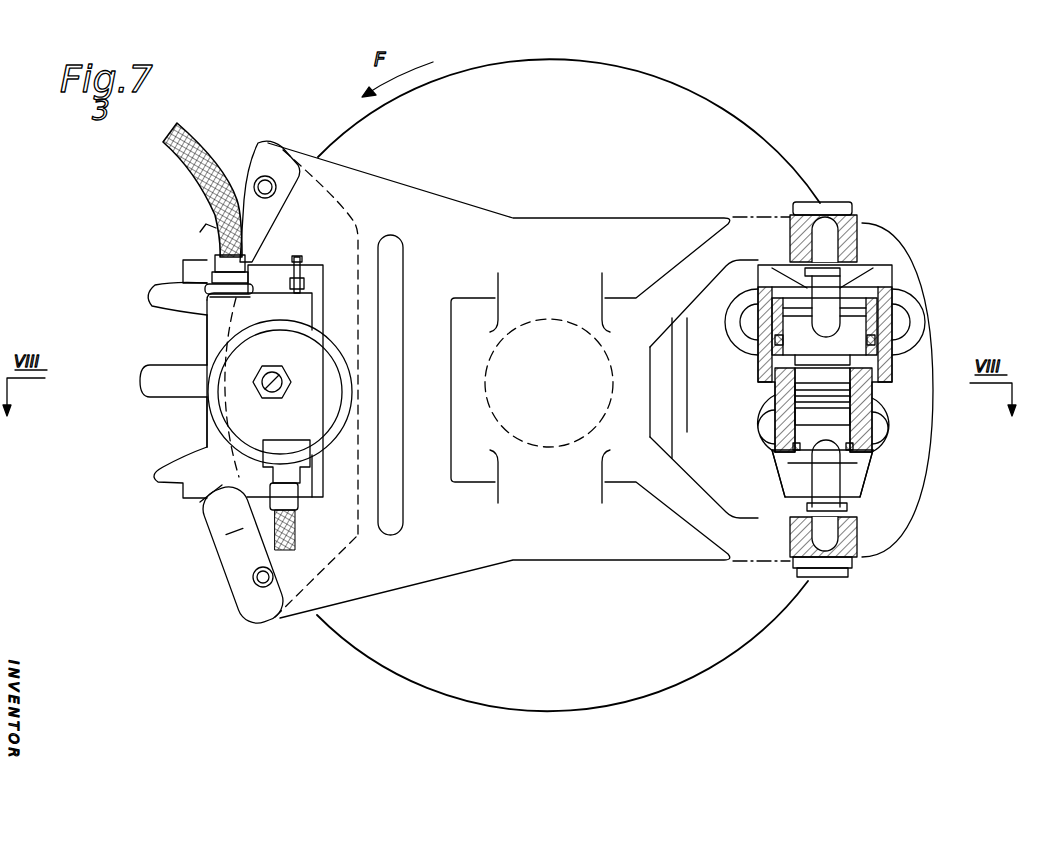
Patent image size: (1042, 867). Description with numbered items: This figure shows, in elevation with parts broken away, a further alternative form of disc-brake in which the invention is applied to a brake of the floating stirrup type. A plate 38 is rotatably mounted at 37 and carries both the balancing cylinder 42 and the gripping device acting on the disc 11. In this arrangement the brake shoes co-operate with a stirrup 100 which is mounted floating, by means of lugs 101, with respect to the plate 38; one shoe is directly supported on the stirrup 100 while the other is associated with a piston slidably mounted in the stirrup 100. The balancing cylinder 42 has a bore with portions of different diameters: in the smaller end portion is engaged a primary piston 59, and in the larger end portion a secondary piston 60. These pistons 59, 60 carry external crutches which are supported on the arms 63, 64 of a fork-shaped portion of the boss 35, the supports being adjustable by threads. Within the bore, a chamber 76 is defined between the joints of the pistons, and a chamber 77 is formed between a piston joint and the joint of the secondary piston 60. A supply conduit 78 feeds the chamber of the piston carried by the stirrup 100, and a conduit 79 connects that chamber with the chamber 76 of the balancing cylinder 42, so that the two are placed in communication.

The brake disc 11 is at (687, 98).
The boss 35 is at (473, 472).
The rotatable mounting 37 is at (553, 318).
The plate 38 is at (452, 560).
The balancing cylinder 42 is at (892, 372).
The primary piston 59 is at (870, 432).
The secondary piston 60 is at (887, 300).
The arm 63 is at (752, 560).
The arm 64 is at (758, 223).
The chamber 76 is at (888, 427).
The chamber 77 is at (893, 353).
The supply conduit 78 is at (187, 160).
The conduit 79 is at (297, 530).
The stirrup 100 is at (165, 470).
The lugs 101 is at (253, 177).